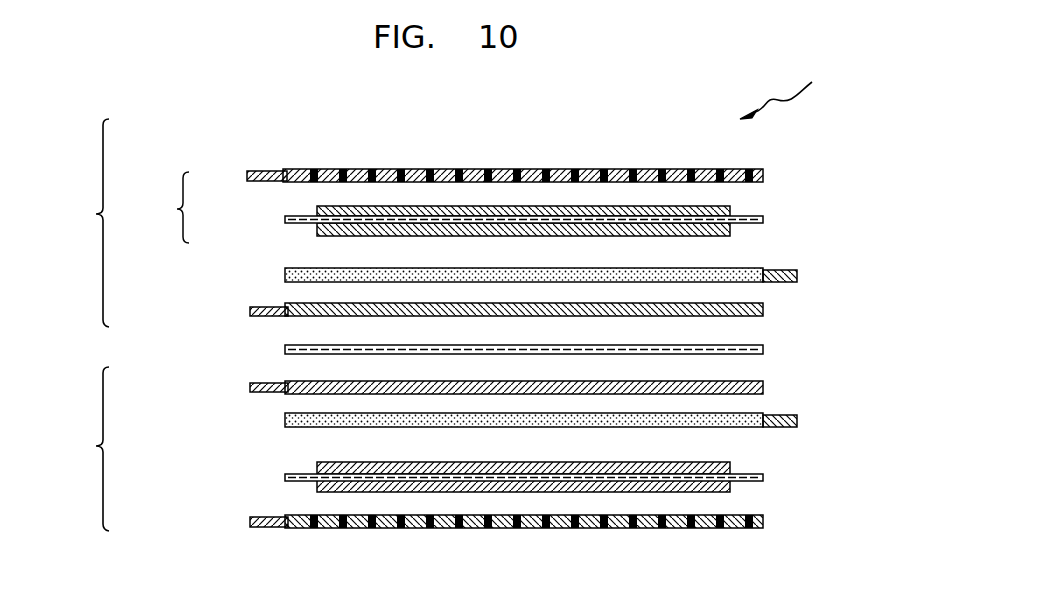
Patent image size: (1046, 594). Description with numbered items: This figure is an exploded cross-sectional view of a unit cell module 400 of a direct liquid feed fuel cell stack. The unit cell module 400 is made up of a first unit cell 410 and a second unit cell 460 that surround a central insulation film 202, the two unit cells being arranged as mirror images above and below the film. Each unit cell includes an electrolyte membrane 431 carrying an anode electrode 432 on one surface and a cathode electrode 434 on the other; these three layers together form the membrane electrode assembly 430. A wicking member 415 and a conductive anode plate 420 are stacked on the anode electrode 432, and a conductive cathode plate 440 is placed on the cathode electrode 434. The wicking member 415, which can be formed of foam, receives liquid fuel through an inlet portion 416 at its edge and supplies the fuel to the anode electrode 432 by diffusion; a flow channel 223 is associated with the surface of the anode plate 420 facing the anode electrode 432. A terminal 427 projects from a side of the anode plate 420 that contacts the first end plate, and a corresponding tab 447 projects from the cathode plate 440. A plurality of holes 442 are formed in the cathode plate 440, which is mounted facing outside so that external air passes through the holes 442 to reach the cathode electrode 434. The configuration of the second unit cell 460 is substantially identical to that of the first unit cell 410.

The unit cell module 400 is at (800, 89).
The first unit cell 410 is at (80, 223).
The second unit cell 460 is at (80, 449).
The cathode plate 440 is at (486, 342).
The second electrode tab 447 is at (268, 172).
The holes 442 is at (350, 168).
The first electrode plate 430 is at (500, 339).
The cathode electrode 434 is at (322, 208).
The electrolyte membrane 431 is at (292, 219).
The anode electrode 432 is at (322, 230).
The wicking member 415 is at (476, 348).
The flow channel 223 is at (662, 270).
The inlet portion 416 is at (790, 270).
The anode plate 420 is at (301, 316).
The terminal 427 is at (256, 310).
The insulation film 202 is at (763, 349).